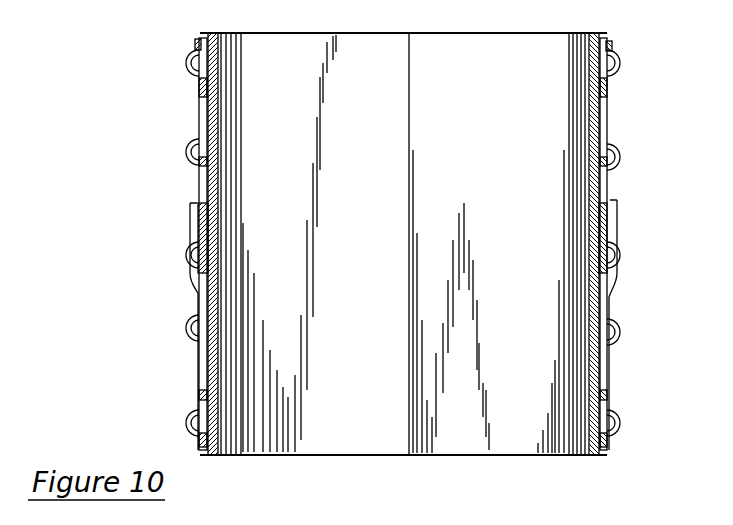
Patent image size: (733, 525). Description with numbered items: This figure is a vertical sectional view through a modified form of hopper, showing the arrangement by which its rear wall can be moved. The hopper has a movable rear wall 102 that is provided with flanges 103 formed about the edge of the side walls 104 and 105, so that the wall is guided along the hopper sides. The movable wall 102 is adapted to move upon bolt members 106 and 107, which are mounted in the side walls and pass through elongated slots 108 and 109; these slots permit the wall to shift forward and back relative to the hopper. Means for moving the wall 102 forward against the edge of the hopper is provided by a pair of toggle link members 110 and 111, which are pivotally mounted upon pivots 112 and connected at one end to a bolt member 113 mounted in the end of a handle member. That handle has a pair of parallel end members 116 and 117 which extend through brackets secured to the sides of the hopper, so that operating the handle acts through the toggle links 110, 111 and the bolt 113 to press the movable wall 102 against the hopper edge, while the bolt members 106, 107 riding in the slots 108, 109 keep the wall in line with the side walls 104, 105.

The movable rear wall 102 is at (380, 48).
The flanges 103 is at (205, 183).
The side wall 104 is at (212, 50).
The side wall 105 is at (593, 52).
The bolt member 106 is at (192, 63).
The bolt member 107 is at (192, 423).
The elongated slot 108 is at (674, 5).
The elongated slot 109 is at (727, 5).
The toggle link member 110 is at (197, 295).
The toggle link member 111 is at (200, 103).
The pivots 112 is at (190, 151).
The bolt member 113 is at (200, 262).
The parallel end member 116 is at (199, 215).
The parallel end member 117 is at (617, 215).